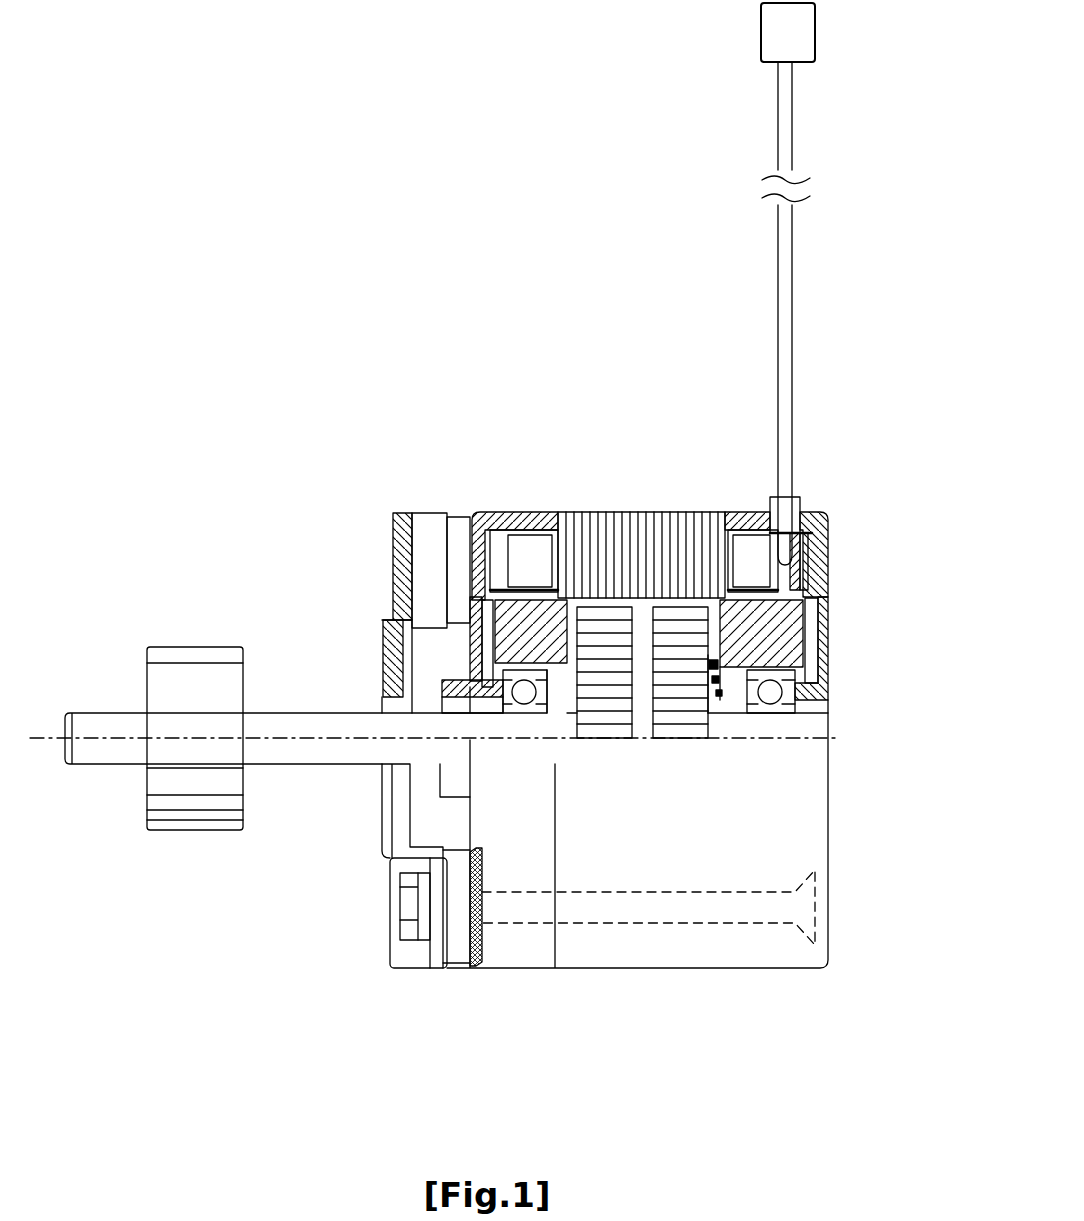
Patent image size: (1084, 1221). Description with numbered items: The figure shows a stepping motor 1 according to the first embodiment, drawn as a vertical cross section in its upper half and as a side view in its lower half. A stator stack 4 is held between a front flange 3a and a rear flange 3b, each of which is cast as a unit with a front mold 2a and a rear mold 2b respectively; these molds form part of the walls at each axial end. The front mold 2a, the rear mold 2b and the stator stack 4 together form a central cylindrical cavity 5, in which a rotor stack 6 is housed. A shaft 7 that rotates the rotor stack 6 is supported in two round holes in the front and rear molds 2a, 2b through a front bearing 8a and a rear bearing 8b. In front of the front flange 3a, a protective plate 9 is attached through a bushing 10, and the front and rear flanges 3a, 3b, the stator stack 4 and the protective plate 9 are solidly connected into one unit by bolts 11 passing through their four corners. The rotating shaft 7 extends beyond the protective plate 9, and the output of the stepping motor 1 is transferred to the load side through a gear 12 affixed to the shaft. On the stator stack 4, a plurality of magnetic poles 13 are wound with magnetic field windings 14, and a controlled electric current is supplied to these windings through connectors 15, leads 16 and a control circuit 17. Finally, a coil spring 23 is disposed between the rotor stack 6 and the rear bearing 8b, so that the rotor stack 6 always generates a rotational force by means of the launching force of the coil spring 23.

The stepping motor 1 is at (384, 205).
The front mold 2a is at (480, 610).
The rear mold 2b is at (805, 655).
The front flange 3a is at (478, 513).
The rear flange 3b is at (822, 512).
The stator stack 4 is at (650, 500).
The central cylindrical cavity 5 is at (790, 628).
The rotor stack 6 is at (605, 597).
The shaft 7 is at (310, 765).
The front bearing 8a is at (525, 702).
The rear bearing 8b is at (787, 706).
The protective plate 9 is at (393, 522).
The bushing 10 is at (452, 968).
The bolts 11 is at (630, 965).
The gear 12 is at (195, 832).
The magnetic poles 13 is at (705, 512).
The magnetic field windings 14 is at (528, 533).
The connectors 15 is at (815, 40).
The leads 16 is at (793, 322).
The control circuit 17 is at (800, 572).
The coil spring 23 is at (730, 700).